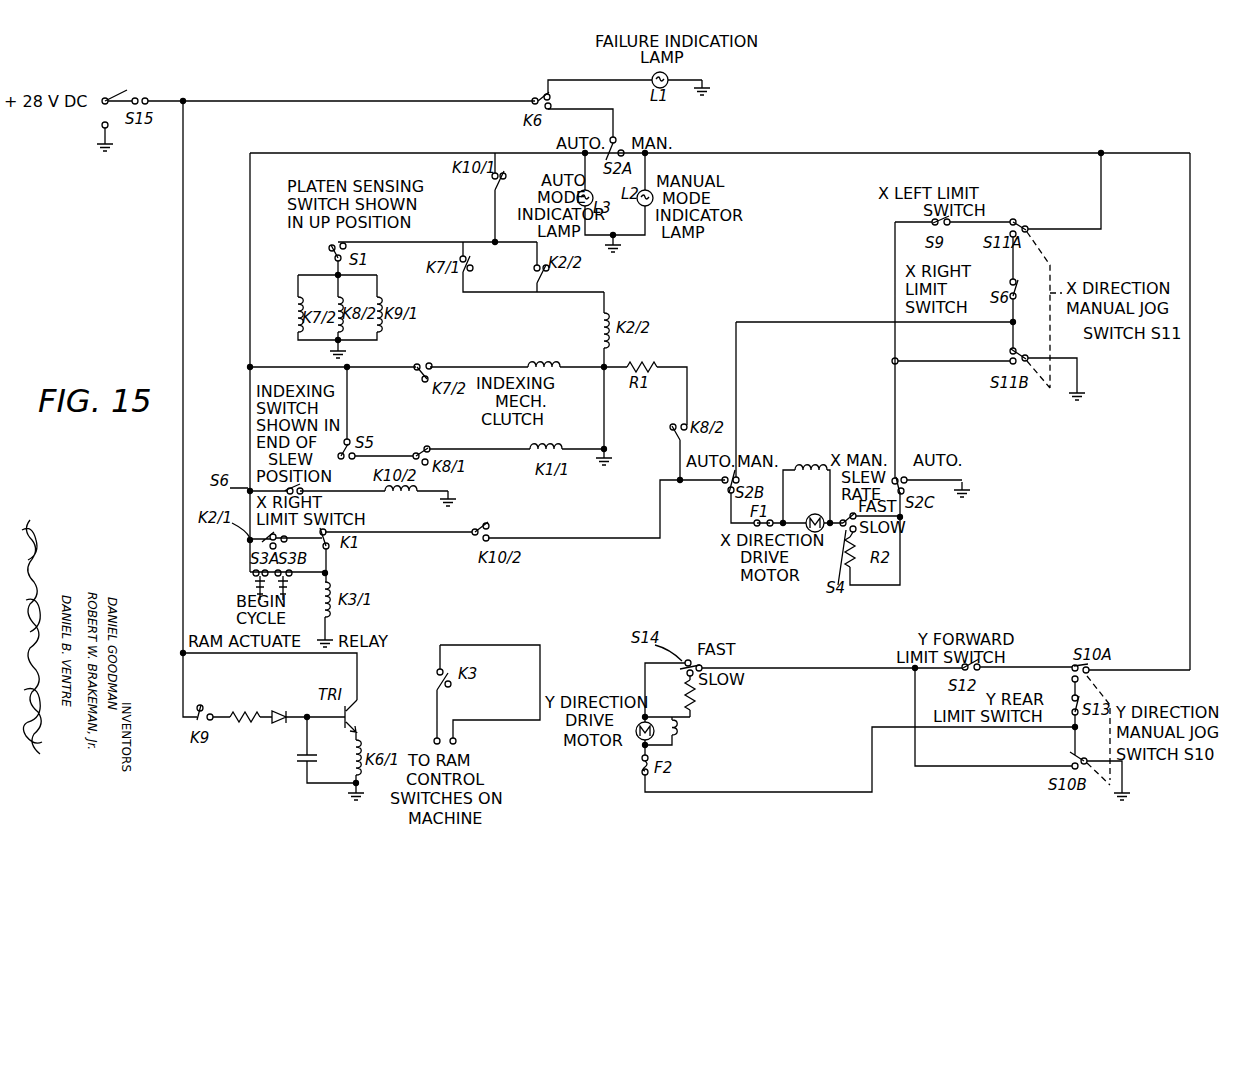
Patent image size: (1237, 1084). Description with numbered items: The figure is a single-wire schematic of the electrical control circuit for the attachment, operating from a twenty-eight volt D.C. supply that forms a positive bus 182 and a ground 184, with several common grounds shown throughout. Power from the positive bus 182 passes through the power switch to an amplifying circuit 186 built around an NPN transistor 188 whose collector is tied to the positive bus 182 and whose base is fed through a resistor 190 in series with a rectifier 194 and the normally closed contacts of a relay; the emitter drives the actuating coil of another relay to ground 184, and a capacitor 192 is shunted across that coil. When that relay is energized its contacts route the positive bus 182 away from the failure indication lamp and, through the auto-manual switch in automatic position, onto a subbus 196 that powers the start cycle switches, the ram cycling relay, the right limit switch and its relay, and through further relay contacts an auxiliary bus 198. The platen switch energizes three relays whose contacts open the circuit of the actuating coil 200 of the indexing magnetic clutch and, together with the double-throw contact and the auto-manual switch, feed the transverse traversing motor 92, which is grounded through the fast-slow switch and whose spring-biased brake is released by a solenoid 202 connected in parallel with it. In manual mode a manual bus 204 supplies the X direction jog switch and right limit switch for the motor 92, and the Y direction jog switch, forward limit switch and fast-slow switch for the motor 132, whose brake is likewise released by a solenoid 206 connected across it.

The positive bus 182 is at (126, 99).
The ground 184 is at (1148, 791).
The amplifying circuit 186 is at (252, 679).
The NPN transistor 188 is at (362, 716).
The resistor 190 is at (236, 702).
The capacitor 192 is at (297, 757).
The rectifier 194 is at (280, 703).
The subbus 196 is at (370, 152).
The auxiliary bus 198 is at (420, 242).
The actuating coil 200 is at (557, 365).
The solenoid 202 is at (828, 453).
The manual bus 204 is at (872, 153).
The transverse traversing motor 92 is at (809, 509).
The motor 132 is at (638, 740).
The solenoid 206 is at (677, 732).